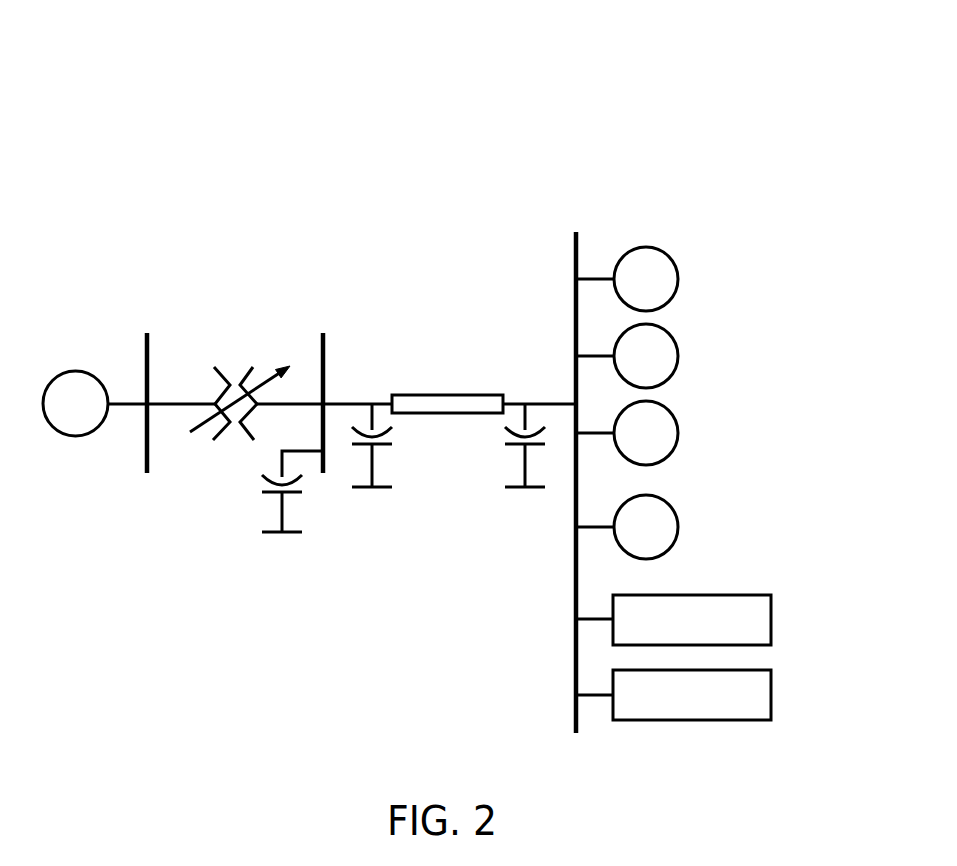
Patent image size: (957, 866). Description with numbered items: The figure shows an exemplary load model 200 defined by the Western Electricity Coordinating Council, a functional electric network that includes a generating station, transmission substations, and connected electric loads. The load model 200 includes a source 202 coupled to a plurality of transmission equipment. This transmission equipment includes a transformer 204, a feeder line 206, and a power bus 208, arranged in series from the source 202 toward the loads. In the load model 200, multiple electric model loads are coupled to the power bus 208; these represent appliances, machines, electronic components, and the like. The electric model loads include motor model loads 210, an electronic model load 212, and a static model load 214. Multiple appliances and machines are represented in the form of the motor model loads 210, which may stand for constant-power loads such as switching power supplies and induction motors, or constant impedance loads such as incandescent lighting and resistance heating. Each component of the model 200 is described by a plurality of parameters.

The load model 200 is at (683, 78).
The source 202 is at (76, 370).
The transformer 204 is at (222, 368).
The feeder line 206 is at (448, 394).
The power bus 208 is at (574, 250).
The motor model loads 210 is at (673, 507).
The electronic model load 212 is at (772, 618).
The static model load 214 is at (772, 693).